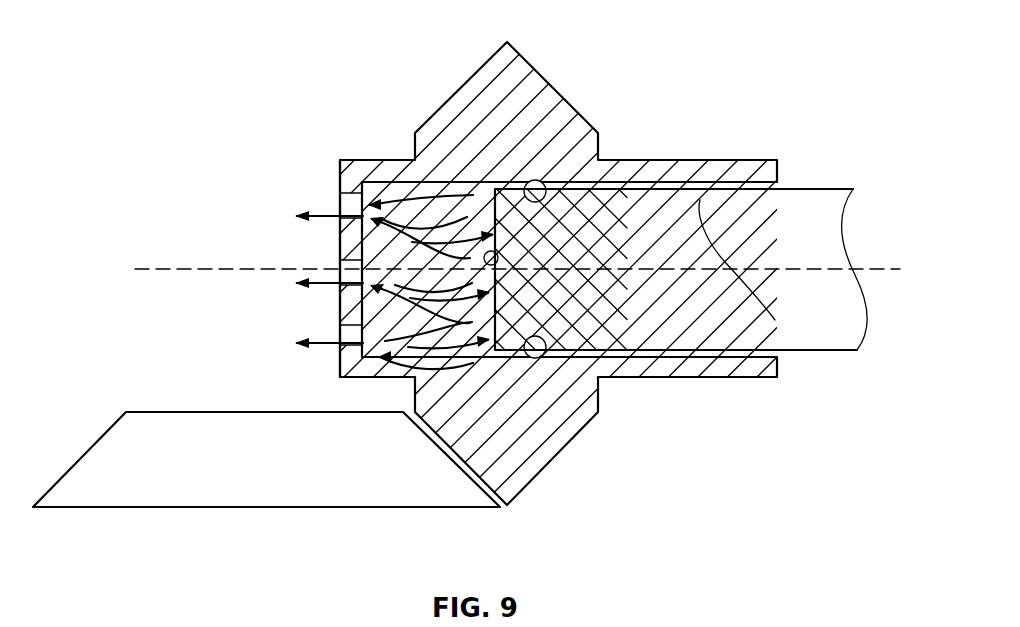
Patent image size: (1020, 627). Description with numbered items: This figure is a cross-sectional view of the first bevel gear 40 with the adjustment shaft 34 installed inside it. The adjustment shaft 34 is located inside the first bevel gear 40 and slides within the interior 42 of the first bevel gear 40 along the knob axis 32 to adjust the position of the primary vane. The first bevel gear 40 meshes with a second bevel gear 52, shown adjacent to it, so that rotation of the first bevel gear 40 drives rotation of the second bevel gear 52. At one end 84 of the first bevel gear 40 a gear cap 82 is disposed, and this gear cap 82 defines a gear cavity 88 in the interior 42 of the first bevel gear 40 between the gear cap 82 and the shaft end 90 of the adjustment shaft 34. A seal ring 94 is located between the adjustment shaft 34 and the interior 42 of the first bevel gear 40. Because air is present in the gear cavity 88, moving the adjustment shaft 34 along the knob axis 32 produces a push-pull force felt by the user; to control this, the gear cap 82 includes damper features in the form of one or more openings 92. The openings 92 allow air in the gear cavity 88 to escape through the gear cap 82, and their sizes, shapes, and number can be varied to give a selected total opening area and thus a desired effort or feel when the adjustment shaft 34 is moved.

The first bevel gear 40 is at (562, 32).
The knob axis 32 is at (880, 268).
The adjustment shaft 34 is at (828, 210).
The interior 42 is at (693, 192).
The second bevel gear 52 is at (183, 428).
The gear cap 82 is at (350, 173).
The end 84 is at (348, 175).
The gear cavity 88 is at (420, 188).
The shaft end 90 is at (498, 262).
The openings 92 is at (348, 208).
The seal ring 94 is at (538, 182).